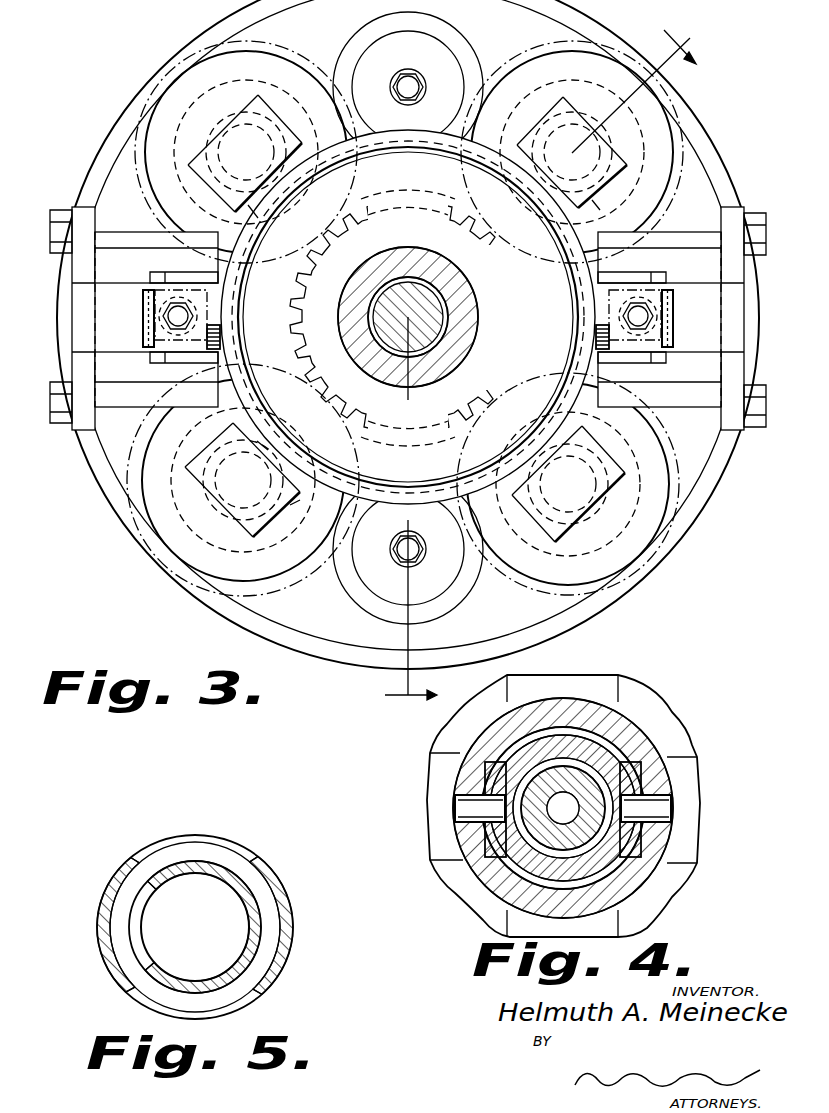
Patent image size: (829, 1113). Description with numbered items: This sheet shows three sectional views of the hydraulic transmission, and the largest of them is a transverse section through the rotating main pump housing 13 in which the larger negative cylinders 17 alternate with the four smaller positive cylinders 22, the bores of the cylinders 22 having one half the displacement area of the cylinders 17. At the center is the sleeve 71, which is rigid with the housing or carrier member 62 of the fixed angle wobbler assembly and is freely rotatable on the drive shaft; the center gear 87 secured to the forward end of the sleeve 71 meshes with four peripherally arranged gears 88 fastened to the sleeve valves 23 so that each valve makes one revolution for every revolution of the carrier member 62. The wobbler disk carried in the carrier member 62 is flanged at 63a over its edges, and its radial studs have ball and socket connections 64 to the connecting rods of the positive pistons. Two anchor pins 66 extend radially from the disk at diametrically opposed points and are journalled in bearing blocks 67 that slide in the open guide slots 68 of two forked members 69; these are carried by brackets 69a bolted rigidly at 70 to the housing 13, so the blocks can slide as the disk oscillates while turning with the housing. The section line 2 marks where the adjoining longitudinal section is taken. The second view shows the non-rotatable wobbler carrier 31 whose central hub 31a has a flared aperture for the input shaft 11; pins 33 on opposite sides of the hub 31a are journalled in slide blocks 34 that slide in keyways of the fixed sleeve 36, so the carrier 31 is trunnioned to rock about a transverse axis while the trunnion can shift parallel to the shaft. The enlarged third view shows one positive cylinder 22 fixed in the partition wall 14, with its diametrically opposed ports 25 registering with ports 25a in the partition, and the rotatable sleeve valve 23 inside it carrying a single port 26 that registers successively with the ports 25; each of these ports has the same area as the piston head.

In FIG. 3, the section line 2- 2 is at (551, 373).
In FIG. 4, the input or drive shaft 11 is at (483, 893).
In FIG. 3, the main pump housing 13 is at (110, 503).
In FIG. 5, the partition wall 14 is at (283, 882).
In FIG. 3, the negative cylinders 17 is at (446, 53).
In FIG. 3, the positive cylinders 22 is at (232, 128).
In FIG. 5, the positive cylinders 22 is at (270, 917).
In FIG. 5, the sleeve valve 23 is at (213, 862).
In FIG. 5, the ports 25 is at (230, 863).
In FIG. 5, the ports 25a is at (138, 852).
In FIG. 5, the port 26 is at (142, 936).
In FIG. 4, the wobbler carrier 31 is at (670, 732).
In FIG. 4, the hub 31a is at (596, 752).
In FIG. 4, the pins 33 is at (677, 800).
In FIG. 4, the slide blocks 34 is at (662, 778).
In FIG. 4, the fixed sleeve 36 is at (633, 732).
In FIG. 3, the housing or carrier member 62 is at (405, 165).
In FIG. 3, the flange 63a is at (380, 128).
In FIG. 3, the ball and socket connections 64 is at (234, 120).
In FIG. 3, the anchor pins 66 is at (306, 270).
In FIG. 3, the bearing blocks 67 is at (212, 333).
In FIG. 3, the guide slots 68 is at (142, 290).
In FIG. 3, the forked members 69 is at (705, 272).
In FIG. 3, the brackets 69a is at (72, 368).
In FIG. 3, the bolts 70 is at (58, 250).
In FIG. 3, the sleeve 71 is at (447, 271).
In FIG. 3, the center gear 87 is at (408, 317).
In FIG. 3, the gears 88 is at (373, 217).